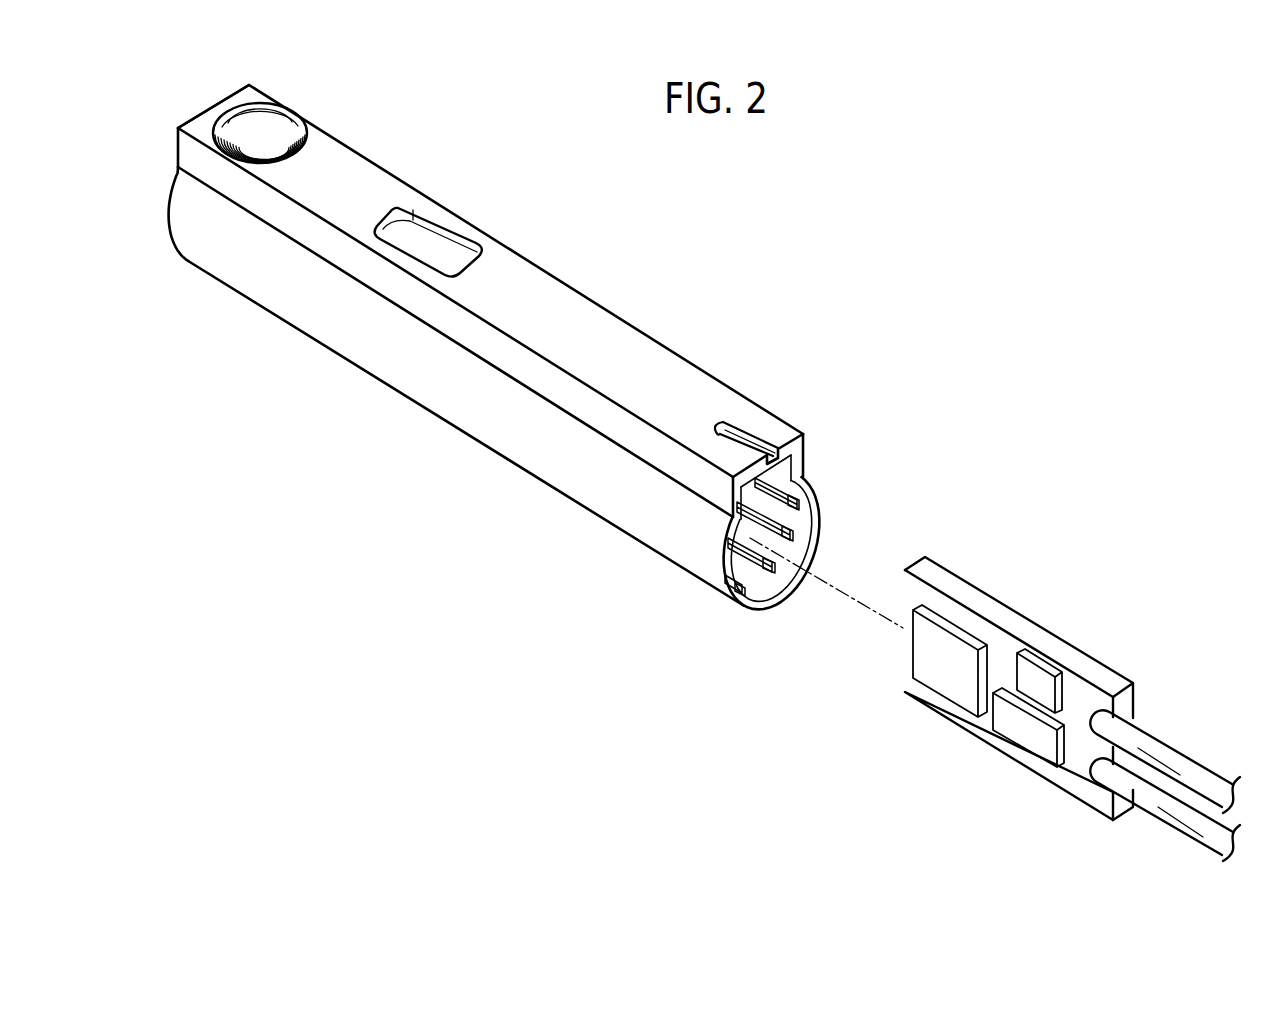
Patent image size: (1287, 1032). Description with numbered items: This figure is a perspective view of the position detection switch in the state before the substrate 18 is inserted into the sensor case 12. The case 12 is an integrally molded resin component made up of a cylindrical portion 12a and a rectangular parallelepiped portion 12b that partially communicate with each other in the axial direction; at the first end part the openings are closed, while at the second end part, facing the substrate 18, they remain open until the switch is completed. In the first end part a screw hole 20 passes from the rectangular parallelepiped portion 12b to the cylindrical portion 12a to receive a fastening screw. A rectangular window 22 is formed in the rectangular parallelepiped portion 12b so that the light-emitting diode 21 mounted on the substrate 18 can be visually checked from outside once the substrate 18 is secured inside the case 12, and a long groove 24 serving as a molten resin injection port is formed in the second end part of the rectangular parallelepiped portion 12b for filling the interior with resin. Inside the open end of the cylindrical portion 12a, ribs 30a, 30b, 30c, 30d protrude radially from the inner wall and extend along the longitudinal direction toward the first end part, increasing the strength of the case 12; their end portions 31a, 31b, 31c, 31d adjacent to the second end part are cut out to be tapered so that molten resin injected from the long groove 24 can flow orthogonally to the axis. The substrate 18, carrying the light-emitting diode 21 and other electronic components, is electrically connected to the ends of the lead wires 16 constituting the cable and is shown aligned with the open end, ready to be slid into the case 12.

The sensor case 12 is at (517, 280).
The cylindrical portion 12a is at (250, 264).
The rectangular parallelepiped portion 12b is at (338, 175).
The lead wires 16 is at (1168, 760).
The substrate 18 is at (1082, 697).
The screw hole 20 is at (264, 128).
The light-emitting diode 21 is at (1037, 672).
The rectangular window 22 is at (435, 223).
The long groove 24 is at (745, 435).
The rib 30a is at (773, 489).
The rib 30b is at (745, 514).
The rib 30c is at (730, 549).
The rib 30d is at (730, 576).
The end portion 31a is at (797, 499).
The end portion 31b is at (797, 537).
The end portion 31c is at (773, 574).
The end portion 31d is at (745, 598).